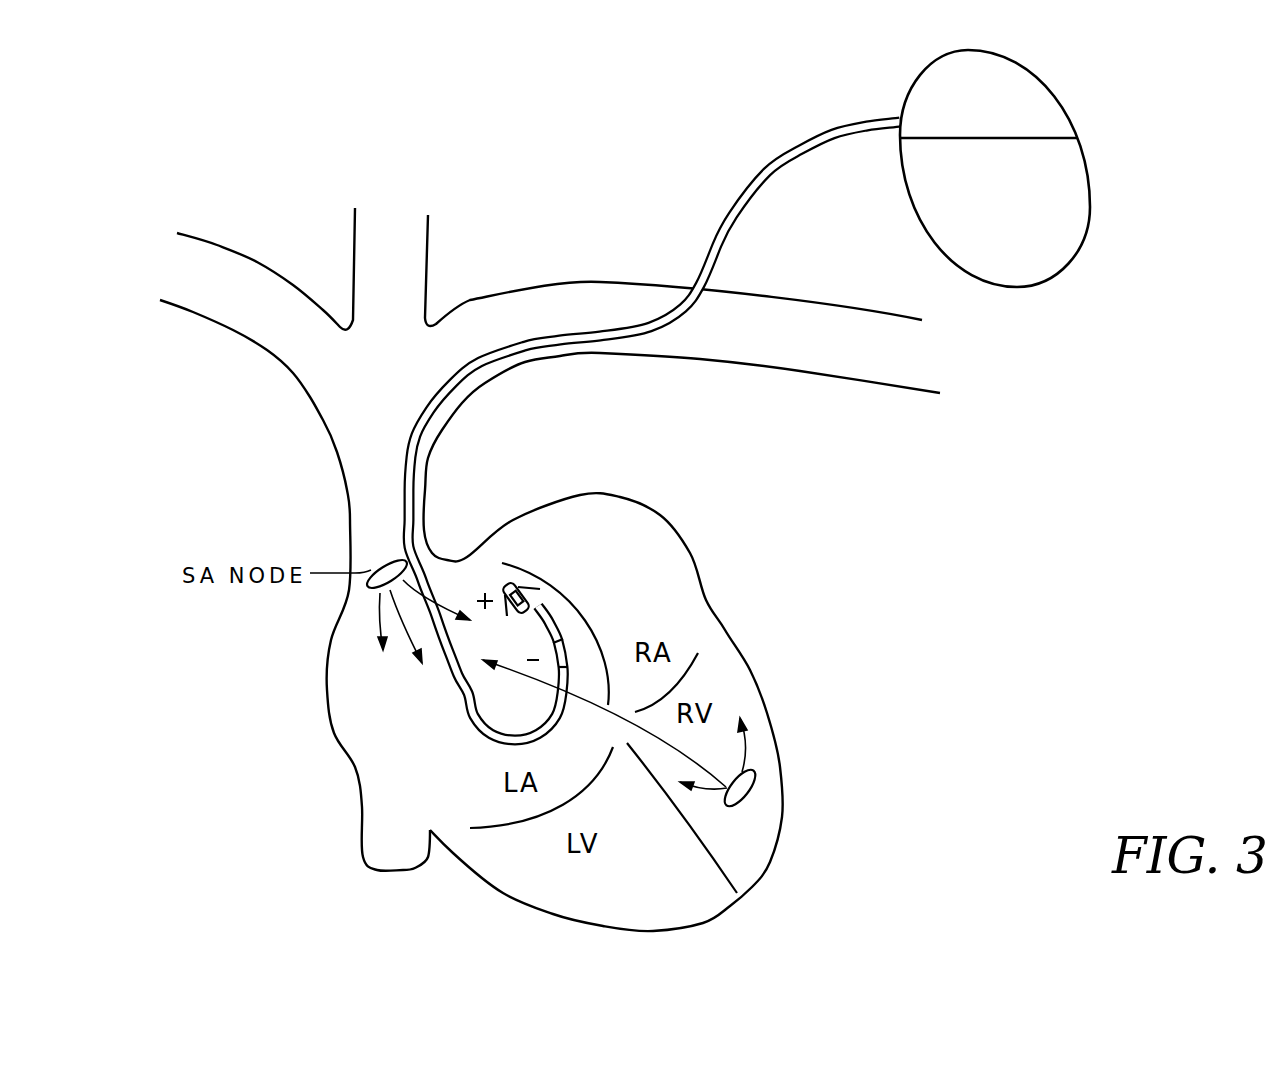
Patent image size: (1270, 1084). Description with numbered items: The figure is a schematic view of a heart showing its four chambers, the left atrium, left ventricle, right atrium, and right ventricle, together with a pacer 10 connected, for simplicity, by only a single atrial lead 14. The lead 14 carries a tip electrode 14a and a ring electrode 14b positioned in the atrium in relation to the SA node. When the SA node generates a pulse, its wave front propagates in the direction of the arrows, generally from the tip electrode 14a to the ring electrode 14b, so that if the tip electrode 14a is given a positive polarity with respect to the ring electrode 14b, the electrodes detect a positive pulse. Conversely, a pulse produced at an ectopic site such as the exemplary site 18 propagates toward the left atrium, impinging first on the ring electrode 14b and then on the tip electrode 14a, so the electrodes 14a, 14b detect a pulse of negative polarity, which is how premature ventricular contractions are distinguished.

The pacer 10 is at (1058, 100).
The atrial lead 14 is at (765, 170).
The tip electrode 14a is at (512, 572).
The ring electrode 14b is at (566, 655).
The ectopic site 18 is at (740, 805).